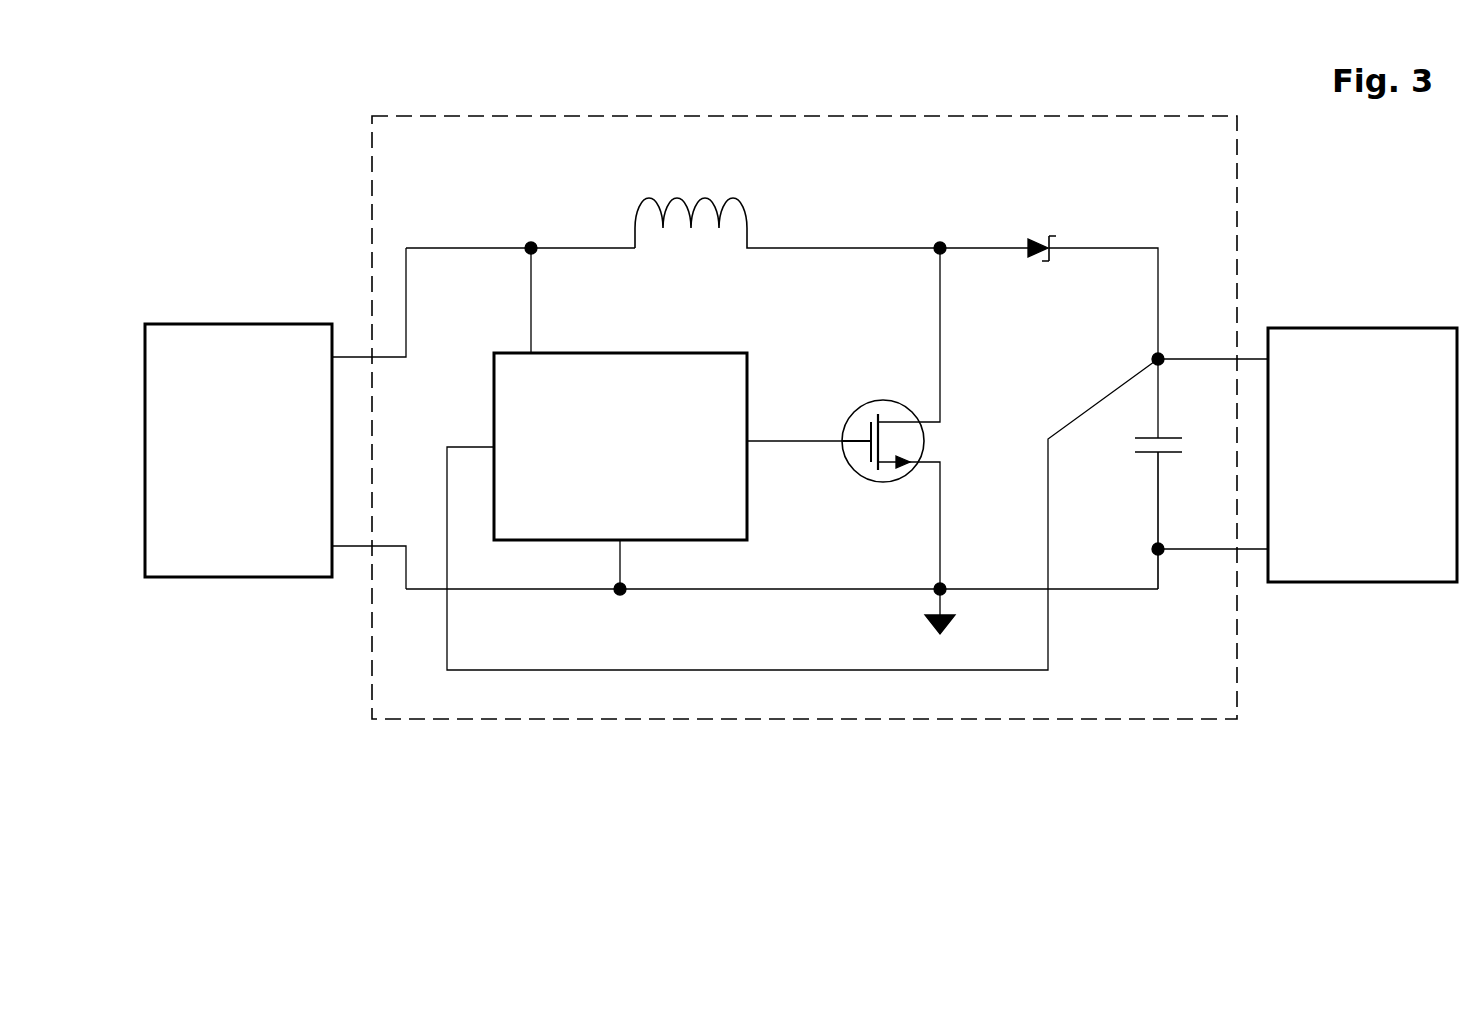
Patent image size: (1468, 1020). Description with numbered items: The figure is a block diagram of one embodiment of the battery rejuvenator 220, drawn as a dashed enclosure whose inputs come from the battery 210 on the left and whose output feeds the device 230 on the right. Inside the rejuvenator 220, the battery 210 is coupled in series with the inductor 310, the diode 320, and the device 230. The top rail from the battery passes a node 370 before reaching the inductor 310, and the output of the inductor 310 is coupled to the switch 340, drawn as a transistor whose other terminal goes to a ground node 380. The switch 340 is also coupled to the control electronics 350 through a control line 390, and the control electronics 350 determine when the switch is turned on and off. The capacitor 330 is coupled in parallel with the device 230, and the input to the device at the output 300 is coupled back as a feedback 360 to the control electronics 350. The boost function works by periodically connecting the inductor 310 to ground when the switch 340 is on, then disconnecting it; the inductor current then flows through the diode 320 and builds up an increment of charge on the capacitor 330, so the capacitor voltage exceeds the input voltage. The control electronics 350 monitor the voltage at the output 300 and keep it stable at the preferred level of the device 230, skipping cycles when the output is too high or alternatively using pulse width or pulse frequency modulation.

The battery 210 is at (275, 418).
The rejuvenator 220 is at (1121, 108).
The device 230 is at (1307, 455).
The output 300 is at (1185, 382).
The inductor L1 310 is at (787, 223).
The diode D1 320 is at (1046, 271).
The capacitor C1 330 is at (1153, 513).
The switch 340 is at (921, 418).
The control electronics 350 is at (620, 446).
The feedback 360 is at (455, 637).
The input node 370 is at (520, 279).
The ground node 380 is at (782, 587).
The control signal line 390 is at (795, 434).